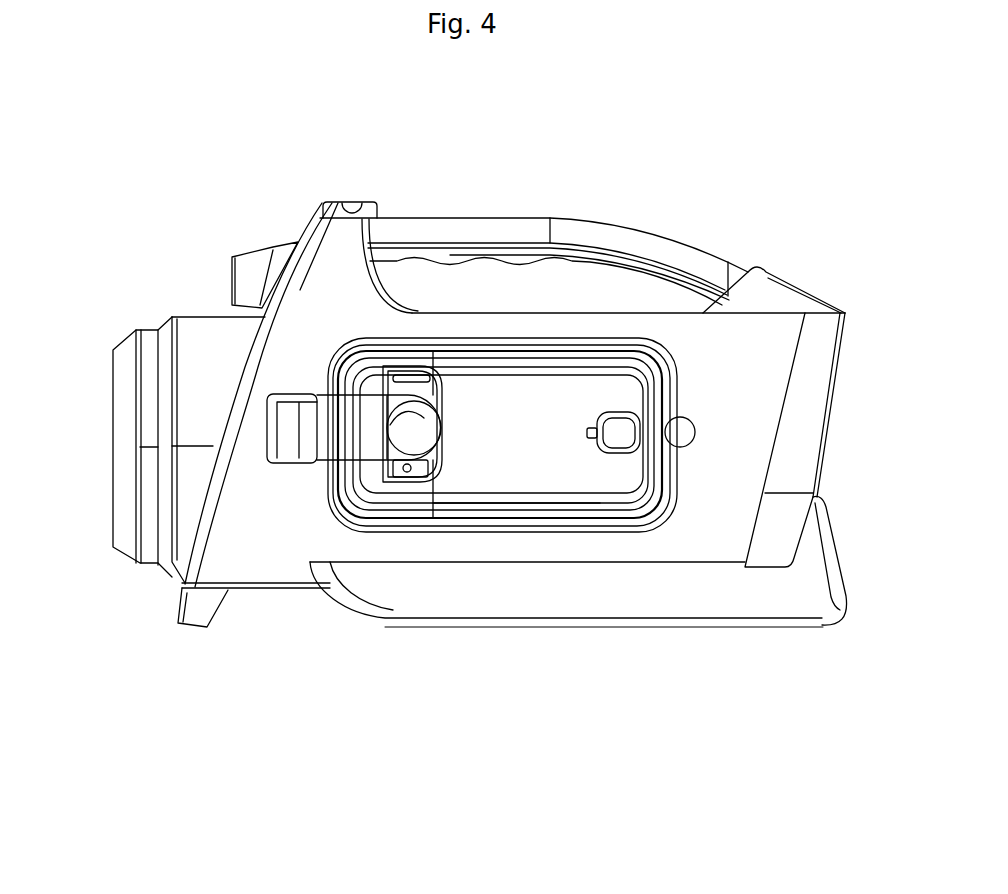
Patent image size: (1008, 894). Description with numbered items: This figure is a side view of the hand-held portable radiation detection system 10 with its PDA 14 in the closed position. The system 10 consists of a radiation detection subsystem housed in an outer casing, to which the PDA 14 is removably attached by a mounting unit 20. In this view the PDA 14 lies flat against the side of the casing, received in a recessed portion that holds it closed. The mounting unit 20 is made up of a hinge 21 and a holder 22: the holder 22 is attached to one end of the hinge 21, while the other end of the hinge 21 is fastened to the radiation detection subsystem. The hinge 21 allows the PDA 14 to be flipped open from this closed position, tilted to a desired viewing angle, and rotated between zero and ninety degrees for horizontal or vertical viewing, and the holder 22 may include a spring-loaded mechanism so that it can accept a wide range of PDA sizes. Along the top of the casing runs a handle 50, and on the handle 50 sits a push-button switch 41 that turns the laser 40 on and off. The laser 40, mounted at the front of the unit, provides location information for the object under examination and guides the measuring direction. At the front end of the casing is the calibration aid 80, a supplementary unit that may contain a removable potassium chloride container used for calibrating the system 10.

The hand-held portable radiation detection system 10 is at (528, 182).
The PDA 14 is at (530, 457).
The mounting unit 20 is at (330, 571).
The hinge 21 is at (340, 422).
The holder 22 is at (417, 465).
The laser 40 is at (250, 280).
The push-button switch 41 is at (355, 202).
The handle 50 is at (633, 240).
The calibration aid 80 is at (120, 348).